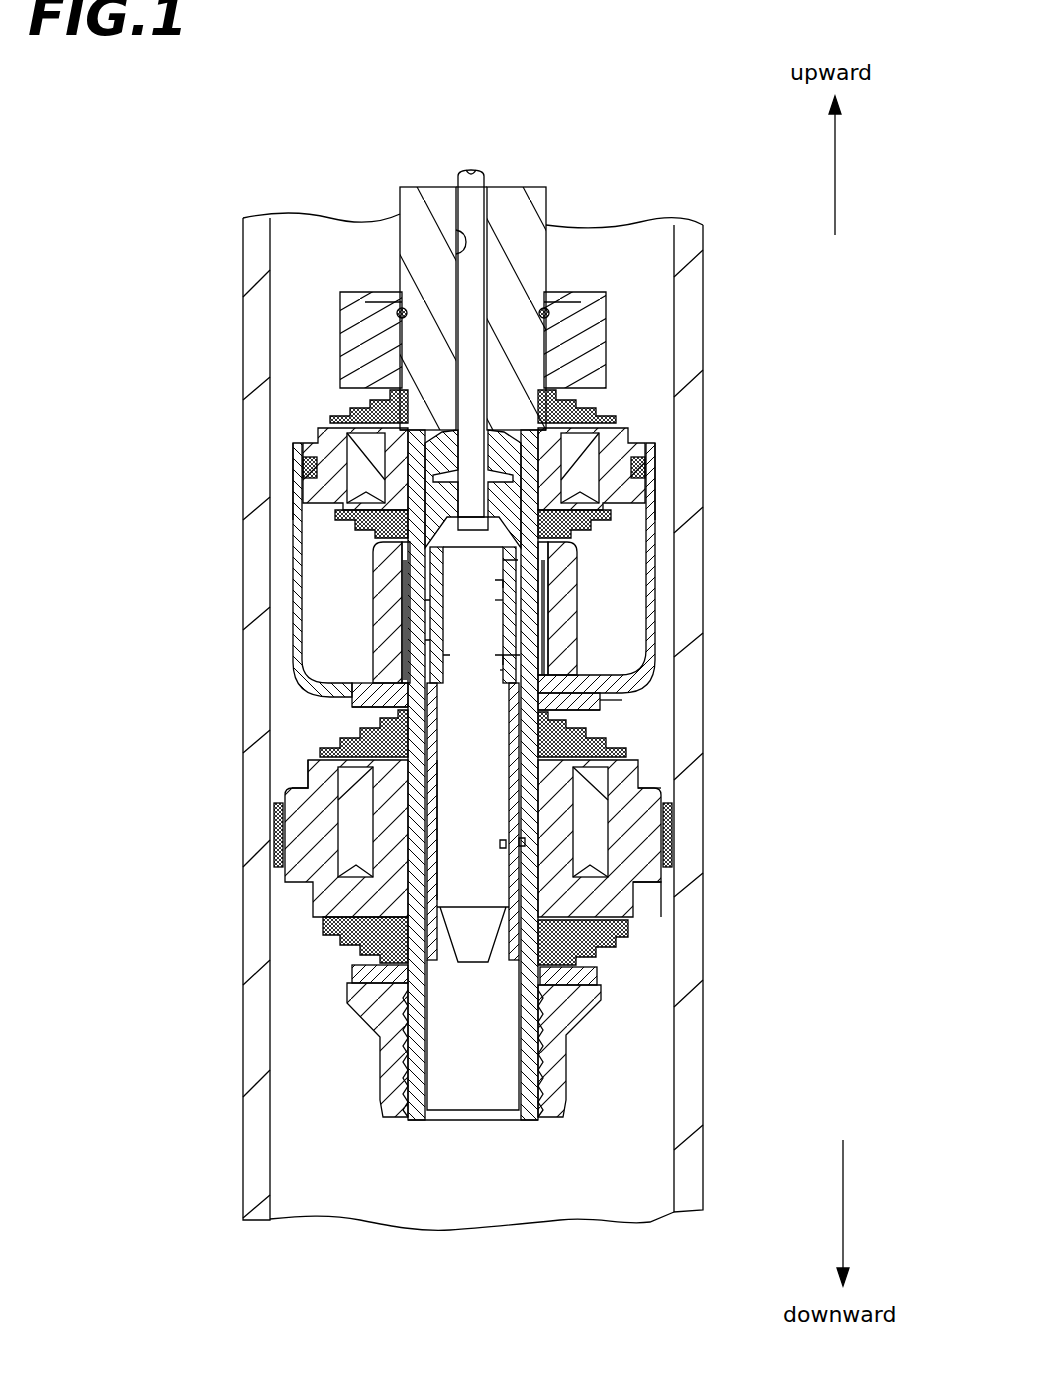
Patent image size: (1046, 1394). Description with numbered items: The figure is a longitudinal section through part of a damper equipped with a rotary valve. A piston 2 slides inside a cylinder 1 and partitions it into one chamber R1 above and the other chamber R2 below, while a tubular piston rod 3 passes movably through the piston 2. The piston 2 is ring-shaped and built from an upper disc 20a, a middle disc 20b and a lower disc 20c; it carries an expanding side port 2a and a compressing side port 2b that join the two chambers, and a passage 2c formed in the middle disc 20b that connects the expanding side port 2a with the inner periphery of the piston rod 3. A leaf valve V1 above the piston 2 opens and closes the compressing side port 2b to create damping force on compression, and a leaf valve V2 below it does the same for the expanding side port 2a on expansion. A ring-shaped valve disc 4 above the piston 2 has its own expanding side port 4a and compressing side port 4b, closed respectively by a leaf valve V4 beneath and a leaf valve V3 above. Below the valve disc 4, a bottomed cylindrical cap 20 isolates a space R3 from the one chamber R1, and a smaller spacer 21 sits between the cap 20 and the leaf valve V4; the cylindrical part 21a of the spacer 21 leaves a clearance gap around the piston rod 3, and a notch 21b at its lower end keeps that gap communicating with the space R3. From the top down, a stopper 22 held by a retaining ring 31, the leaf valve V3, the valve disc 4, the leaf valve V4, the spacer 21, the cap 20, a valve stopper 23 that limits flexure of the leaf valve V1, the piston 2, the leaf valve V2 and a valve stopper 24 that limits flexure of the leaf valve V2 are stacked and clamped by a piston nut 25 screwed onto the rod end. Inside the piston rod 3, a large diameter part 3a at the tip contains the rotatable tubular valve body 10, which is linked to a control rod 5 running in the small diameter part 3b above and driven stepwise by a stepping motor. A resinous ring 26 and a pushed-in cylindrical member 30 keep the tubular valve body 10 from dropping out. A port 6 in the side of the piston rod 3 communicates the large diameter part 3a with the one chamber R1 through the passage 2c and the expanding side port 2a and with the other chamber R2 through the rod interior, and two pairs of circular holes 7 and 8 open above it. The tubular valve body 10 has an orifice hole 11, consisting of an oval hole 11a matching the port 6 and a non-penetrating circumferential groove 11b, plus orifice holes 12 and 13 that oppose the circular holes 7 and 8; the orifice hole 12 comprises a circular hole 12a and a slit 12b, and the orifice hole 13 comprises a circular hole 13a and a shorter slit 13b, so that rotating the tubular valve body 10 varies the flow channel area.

The cylinder 1 is at (231, 301).
The piston 2 is at (660, 791).
The expanding side port 2a is at (600, 845).
The compressing side port 2b is at (352, 890).
The passage 2c is at (665, 815).
The piston rod 3 is at (506, 196).
The large diameter part 3a is at (437, 1040).
The small diameter part 3b is at (458, 233).
The valve disc 4 is at (643, 422).
The expanding side port 4a is at (362, 497).
The compressing side port 4b is at (600, 482).
The control rod 5 is at (468, 188).
The port 6 is at (632, 925).
The circular hole 7 is at (592, 566).
The circular hole 8 is at (580, 622).
The tubular valve body 10 is at (625, 702).
The orifice hole 11 is at (441, 848).
The oval hole 11a is at (500, 852).
The groove 11b is at (526, 858).
The orifice hole 12 is at (518, 594).
The circular hole 12a is at (200, 592).
The slit 12b is at (471, 607).
The orifice hole 13 is at (473, 594).
The circular hole 13a is at (200, 790).
The slit 13b is at (474, 689).
The cap 20 is at (657, 642).
The upper disc 20a is at (378, 806).
The middle disc 20b is at (292, 836).
The lower disc 20c is at (640, 903).
The spacer 21 is at (400, 617).
The cylindrical part 21a is at (404, 650).
The notch 21b is at (600, 678).
The stopper 22 is at (604, 325).
The valve stopper 23 is at (405, 727).
The valve stopper 24 is at (600, 974).
The piston nut 25 is at (577, 1060).
The resinous ring 26 is at (445, 950).
The cylindrical member 30 is at (510, 972).
The retaining ring 31 is at (547, 310).
The one chamber R1 is at (622, 252).
The other chamber R2 is at (355, 1160).
The space R3 is at (351, 558).
The leaf valve V1 is at (617, 738).
The leaf valve V2 is at (309, 965).
The leaf valve V3 is at (616, 398).
The leaf valve V4 is at (607, 530).